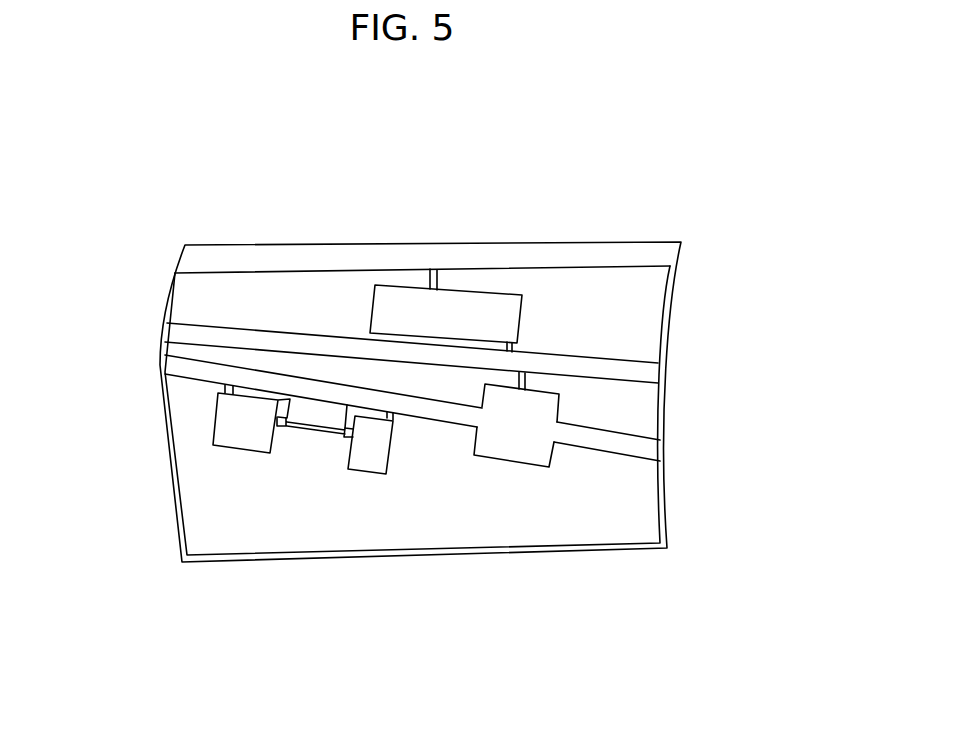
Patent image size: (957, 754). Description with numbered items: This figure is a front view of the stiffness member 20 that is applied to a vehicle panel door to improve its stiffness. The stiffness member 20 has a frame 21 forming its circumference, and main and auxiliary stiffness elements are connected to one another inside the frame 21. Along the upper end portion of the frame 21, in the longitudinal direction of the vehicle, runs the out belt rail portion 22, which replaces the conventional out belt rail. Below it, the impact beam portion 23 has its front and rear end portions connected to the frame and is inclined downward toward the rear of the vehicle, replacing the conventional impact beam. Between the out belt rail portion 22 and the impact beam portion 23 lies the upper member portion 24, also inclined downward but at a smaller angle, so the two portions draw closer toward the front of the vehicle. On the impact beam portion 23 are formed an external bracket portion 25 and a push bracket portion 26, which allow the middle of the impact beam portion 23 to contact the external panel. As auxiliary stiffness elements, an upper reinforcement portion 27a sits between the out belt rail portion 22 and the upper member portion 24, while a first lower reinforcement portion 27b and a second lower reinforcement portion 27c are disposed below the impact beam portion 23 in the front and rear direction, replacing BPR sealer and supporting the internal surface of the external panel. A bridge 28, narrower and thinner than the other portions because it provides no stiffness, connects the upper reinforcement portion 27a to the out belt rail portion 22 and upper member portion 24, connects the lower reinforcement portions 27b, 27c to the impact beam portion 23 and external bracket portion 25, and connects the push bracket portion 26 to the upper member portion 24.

The stiffness member 20 is at (645, 117).
The frame 21 is at (668, 320).
The out belt rail portion 22 is at (499, 255).
The impact beam portion 23 is at (197, 367).
The upper member portion 24 is at (270, 342).
The external bracket portion 25 is at (431, 270).
The push bracket portion 26 is at (547, 463).
The upper reinforcement portion 27a is at (518, 315).
The first lower reinforcement portion 27b is at (228, 422).
The second lower reinforcement portion 27c is at (360, 460).
The bridge 28 is at (527, 381).